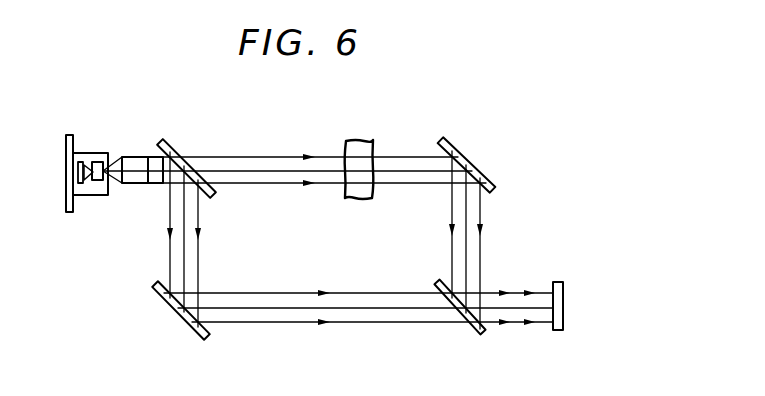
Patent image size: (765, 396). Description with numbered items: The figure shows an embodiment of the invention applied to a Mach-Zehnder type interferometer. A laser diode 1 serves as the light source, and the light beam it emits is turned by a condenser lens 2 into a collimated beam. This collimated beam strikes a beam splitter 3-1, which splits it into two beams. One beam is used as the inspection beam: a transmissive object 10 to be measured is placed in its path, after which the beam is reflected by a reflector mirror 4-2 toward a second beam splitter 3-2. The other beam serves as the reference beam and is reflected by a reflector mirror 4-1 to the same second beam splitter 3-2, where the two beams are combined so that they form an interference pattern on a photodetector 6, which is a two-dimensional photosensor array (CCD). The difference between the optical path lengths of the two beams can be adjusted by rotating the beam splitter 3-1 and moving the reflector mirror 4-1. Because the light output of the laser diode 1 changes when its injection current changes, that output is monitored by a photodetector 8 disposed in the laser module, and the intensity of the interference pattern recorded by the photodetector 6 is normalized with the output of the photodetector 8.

The laser diode 1 is at (96, 181).
The condenser lens 2 is at (134, 155).
The beam splitter 3-1 is at (174, 146).
The second beam splitter 3-2 is at (486, 327).
The reflector mirror 4-1 is at (171, 306).
The reflector mirror 4-2 is at (470, 153).
The photodetector 6 is at (565, 296).
The photodetector 8 is at (80, 185).
The transmissive object 10 is at (357, 140).